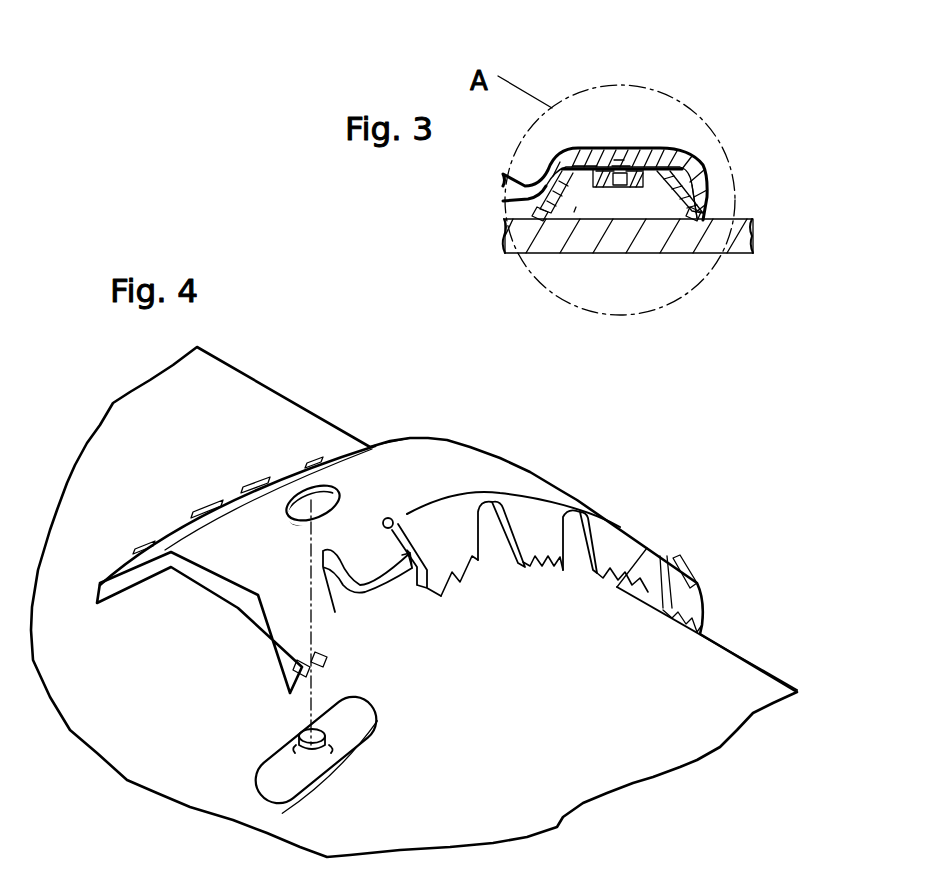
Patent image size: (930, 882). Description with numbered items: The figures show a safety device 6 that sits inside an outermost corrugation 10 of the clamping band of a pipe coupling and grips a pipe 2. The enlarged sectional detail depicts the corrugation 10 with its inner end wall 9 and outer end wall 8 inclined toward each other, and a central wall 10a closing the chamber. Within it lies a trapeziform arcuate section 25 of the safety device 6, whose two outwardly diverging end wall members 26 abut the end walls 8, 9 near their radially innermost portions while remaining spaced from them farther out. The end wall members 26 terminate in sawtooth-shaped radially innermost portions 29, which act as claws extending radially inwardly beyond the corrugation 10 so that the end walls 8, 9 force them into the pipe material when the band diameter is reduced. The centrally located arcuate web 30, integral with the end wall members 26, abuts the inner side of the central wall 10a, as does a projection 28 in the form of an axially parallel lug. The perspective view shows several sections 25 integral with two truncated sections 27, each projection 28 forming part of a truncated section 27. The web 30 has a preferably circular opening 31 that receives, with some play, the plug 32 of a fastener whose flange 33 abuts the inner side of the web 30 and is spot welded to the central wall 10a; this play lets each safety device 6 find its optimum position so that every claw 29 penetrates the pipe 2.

In FIG. 4, the pipe 2 is at (733, 650).
In FIG. 3, the safety device 6 is at (577, 210).
In FIG. 4, the safety device 6 is at (437, 425).
In FIG. 3, the outer end wall 8 is at (703, 183).
In FIG. 3, the inner end wall 9 is at (545, 165).
In FIG. 3, the outermost corrugation 10 is at (622, 158).
In FIG. 3, the central wall 10a is at (618, 152).
In FIG. 3, the arcuate section 25 is at (594, 211).
In FIG. 4, the arcuate section 25 is at (226, 545).
In FIG. 3, the end wall member 26 is at (510, 187).
In FIG. 4, the end wall member 26 is at (147, 550).
In FIG. 4, the truncated section 27 is at (255, 500).
In FIG. 3, the projection 28 is at (672, 168).
In FIG. 4, the projection 28 is at (395, 572).
In FIG. 3, the radially innermost portion 29 is at (538, 216).
In FIG. 4, the radially innermost portion 29 is at (100, 605).
In FIG. 3, the arcuate web 30 is at (597, 166).
In FIG. 4, the arcuate web 30 is at (463, 463).
In FIG. 3, the opening 31 is at (601, 166).
In FIG. 4, the opening 31 is at (318, 480).
In FIG. 3, the plug 32 is at (628, 166).
In FIG. 4, the plug 32 is at (326, 744).
In FIG. 3, the flange 33 is at (636, 190).
In FIG. 4, the flange 33 is at (360, 710).